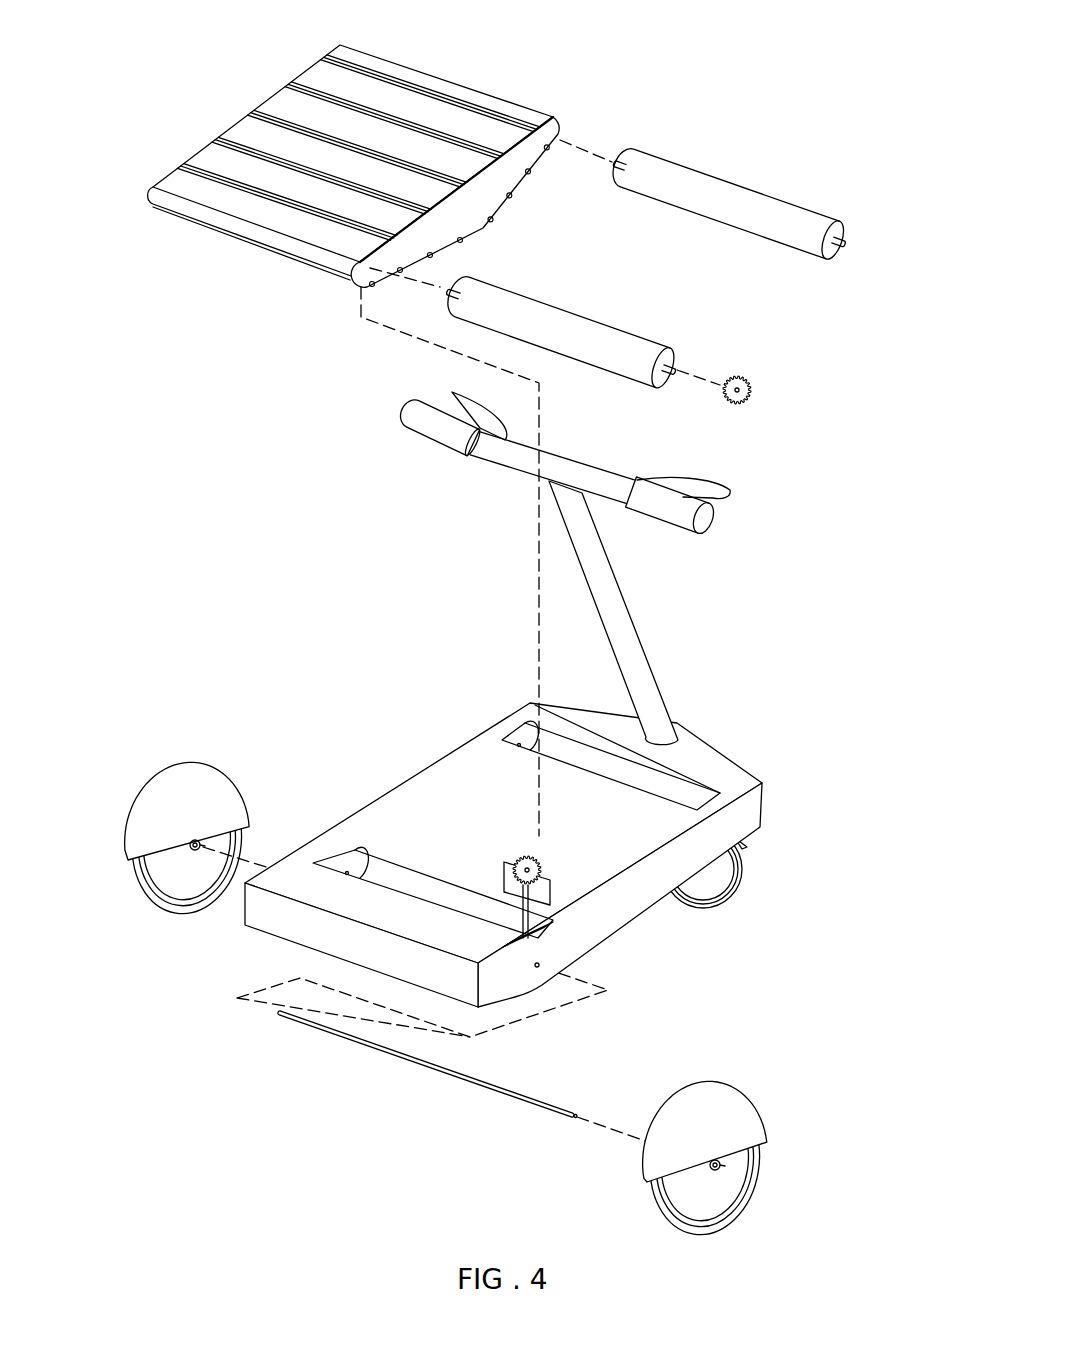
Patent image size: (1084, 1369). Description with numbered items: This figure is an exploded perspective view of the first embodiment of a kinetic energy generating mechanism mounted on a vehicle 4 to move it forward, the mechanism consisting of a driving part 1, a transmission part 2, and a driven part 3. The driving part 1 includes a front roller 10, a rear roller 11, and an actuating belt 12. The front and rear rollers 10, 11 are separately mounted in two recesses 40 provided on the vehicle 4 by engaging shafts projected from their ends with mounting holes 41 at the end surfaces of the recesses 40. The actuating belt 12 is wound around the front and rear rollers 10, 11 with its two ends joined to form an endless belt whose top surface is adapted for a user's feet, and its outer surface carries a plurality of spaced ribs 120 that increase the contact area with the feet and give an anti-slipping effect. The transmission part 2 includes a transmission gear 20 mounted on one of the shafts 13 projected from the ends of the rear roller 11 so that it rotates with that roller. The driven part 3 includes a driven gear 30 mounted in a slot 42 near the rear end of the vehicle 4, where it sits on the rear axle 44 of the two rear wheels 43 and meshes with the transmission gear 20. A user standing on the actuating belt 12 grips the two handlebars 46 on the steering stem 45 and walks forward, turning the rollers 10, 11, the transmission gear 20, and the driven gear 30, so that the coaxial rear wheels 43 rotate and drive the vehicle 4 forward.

The driving part 1 is at (343, 25).
The front roller 10 is at (720, 202).
The rear roller 11 is at (562, 330).
The actuating belt 12 is at (243, 165).
The spaced ribs 120 is at (332, 97).
The shaft 13 is at (843, 240).
The transmission part 2 is at (753, 368).
The transmission gear 20 is at (742, 402).
The driven part 3 is at (542, 843).
The driven gear 30 is at (538, 867).
The vehicle 4 is at (355, 707).
The recesses 40 is at (670, 787).
The mounting holes 41 is at (520, 746).
The slot 42 is at (540, 942).
The rear wheels 43 is at (165, 910).
The rear axle 44 is at (435, 1070).
The steering stem 45 is at (620, 630).
The handlebars 46 is at (445, 433).